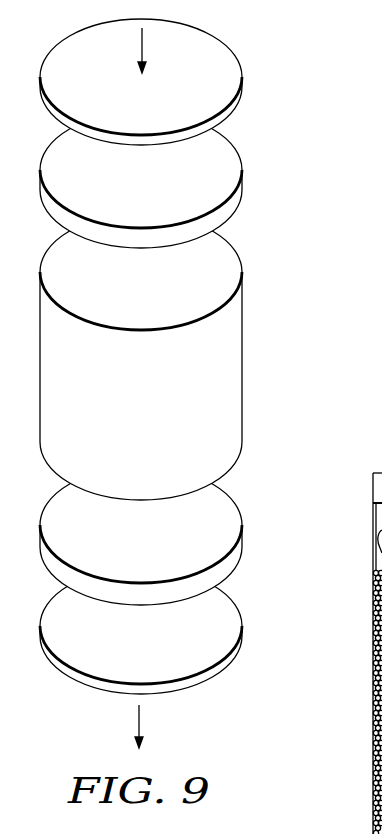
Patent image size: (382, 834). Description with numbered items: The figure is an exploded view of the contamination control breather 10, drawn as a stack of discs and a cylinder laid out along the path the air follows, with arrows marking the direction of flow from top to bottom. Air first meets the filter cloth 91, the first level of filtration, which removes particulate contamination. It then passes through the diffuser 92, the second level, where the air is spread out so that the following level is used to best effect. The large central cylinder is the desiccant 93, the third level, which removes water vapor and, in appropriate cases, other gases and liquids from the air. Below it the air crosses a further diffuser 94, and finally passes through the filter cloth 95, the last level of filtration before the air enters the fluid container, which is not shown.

The contamination control breather 10 is at (312, 145).
The filter cloth 91 is at (230, 58).
The diffuser 92 is at (230, 153).
The desiccant 93 is at (230, 254).
The diffuser 94 is at (229, 506).
The filter cloth 95 is at (228, 607).